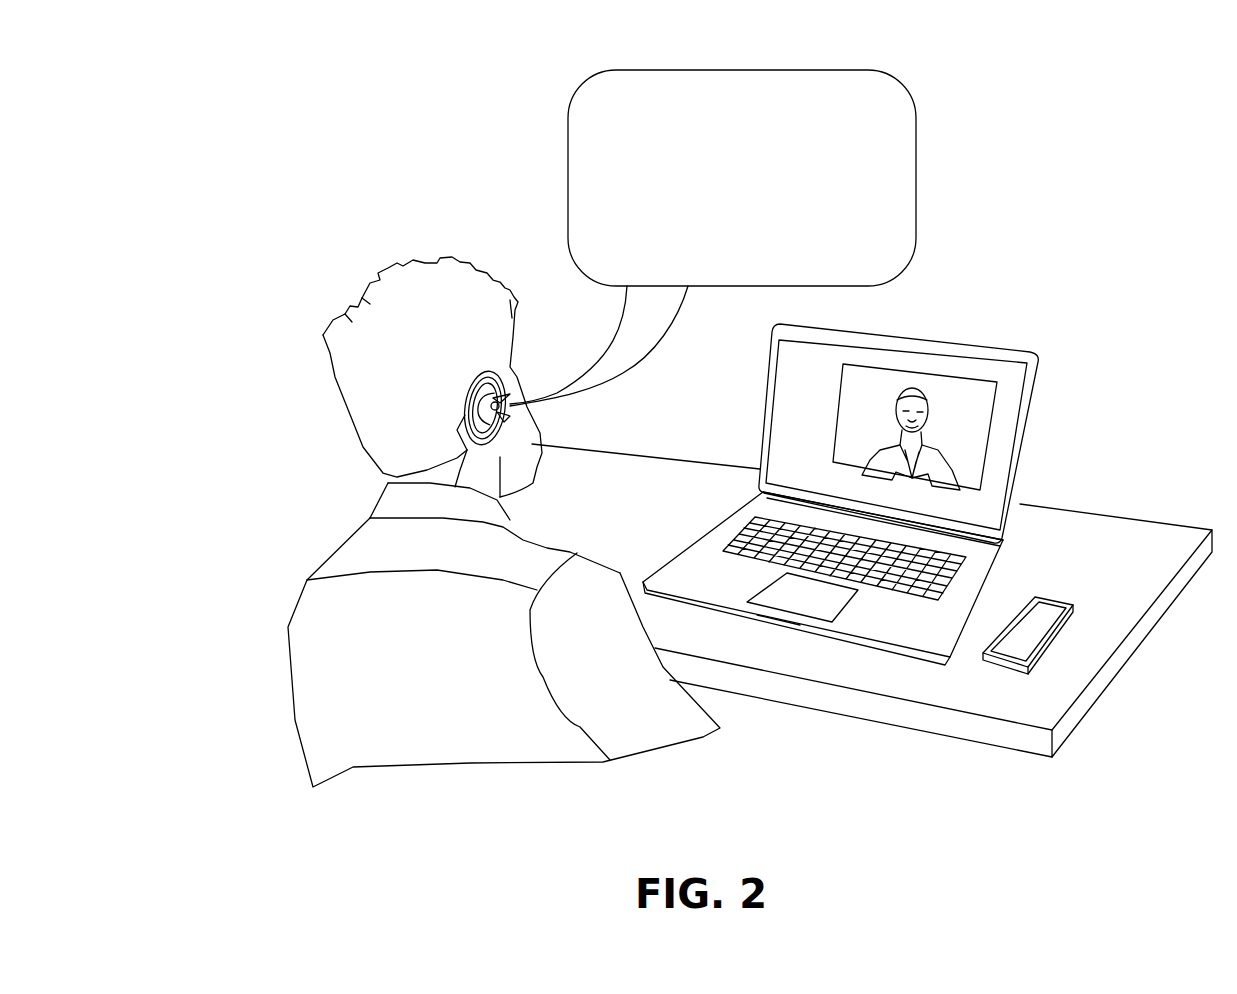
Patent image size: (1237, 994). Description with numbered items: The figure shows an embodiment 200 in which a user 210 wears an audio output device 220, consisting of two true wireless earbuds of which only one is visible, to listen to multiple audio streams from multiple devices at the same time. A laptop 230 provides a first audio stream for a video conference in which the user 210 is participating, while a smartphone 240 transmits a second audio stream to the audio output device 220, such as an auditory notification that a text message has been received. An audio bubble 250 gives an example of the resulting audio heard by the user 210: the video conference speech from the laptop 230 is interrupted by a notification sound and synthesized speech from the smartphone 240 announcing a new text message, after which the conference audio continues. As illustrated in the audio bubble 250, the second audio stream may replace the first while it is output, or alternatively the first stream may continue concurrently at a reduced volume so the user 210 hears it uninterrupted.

The embodiment 200 is at (266, 94).
The user 210 is at (368, 283).
The audio output device 220 is at (480, 372).
The laptop 230 is at (680, 558).
The smartphone 240 is at (1067, 598).
The audio bubble 250 is at (887, 266).